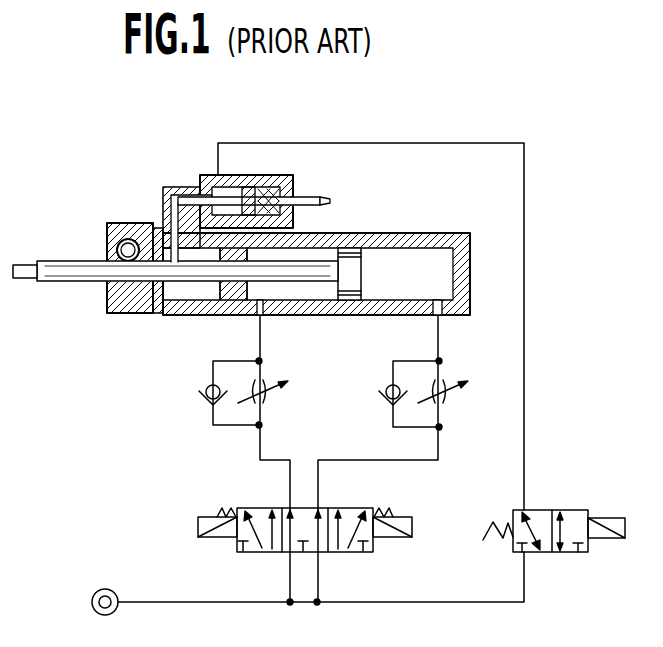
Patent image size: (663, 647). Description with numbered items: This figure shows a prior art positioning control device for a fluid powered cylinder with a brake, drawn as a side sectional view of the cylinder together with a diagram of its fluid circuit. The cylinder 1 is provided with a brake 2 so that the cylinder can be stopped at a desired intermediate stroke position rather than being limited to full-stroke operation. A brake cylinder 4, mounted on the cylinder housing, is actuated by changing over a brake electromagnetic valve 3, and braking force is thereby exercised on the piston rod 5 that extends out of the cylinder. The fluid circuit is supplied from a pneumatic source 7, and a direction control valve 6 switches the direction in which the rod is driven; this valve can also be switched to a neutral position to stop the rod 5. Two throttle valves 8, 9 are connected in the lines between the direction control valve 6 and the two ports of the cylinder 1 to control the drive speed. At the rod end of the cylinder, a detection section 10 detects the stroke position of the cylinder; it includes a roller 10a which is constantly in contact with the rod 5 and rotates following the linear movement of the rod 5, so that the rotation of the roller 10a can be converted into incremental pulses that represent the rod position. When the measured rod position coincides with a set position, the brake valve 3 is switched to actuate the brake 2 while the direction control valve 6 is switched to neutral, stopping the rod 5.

The cylinder 1 is at (386, 234).
The brake 2 is at (182, 302).
The brake electromagnetic valve 3 is at (573, 510).
The brake cylinder 4 is at (301, 188).
The piston rod 5 is at (64, 282).
The direction control valve 6 is at (352, 508).
The pneumatic source 7 is at (114, 590).
The throttle valve 8 is at (266, 397).
The throttle valve 9 is at (446, 397).
The detection section 10 is at (133, 209).
The roller 10a is at (121, 246).